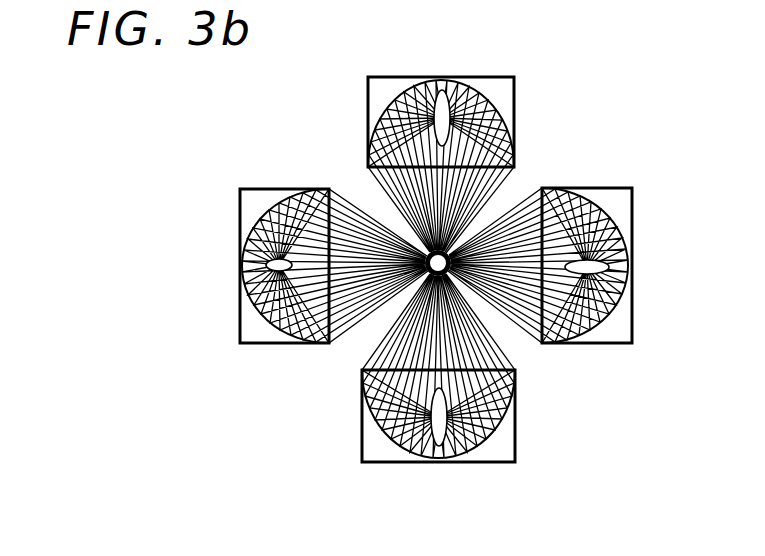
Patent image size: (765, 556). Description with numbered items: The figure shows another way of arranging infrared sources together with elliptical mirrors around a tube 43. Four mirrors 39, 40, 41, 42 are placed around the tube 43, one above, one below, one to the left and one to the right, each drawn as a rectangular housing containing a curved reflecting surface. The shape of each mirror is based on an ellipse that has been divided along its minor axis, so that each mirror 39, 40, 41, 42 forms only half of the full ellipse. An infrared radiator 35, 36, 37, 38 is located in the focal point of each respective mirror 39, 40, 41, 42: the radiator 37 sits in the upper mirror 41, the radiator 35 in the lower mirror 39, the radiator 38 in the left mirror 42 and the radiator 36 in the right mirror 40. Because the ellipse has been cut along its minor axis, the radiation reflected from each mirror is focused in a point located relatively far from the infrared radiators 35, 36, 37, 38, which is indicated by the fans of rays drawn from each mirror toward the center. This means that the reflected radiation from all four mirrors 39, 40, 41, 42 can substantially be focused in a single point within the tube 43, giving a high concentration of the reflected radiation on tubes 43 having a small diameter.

The infrared radiator 35 is at (435, 455).
The infrared radiator 36 is at (632, 270).
The infrared radiator 37 is at (441, 82).
The infrared radiator 38 is at (240, 268).
The mirror 39 is at (484, 462).
The mirror 40 is at (620, 222).
The mirror 41 is at (392, 80).
The mirror 42 is at (262, 224).
The tube 43 is at (455, 250).